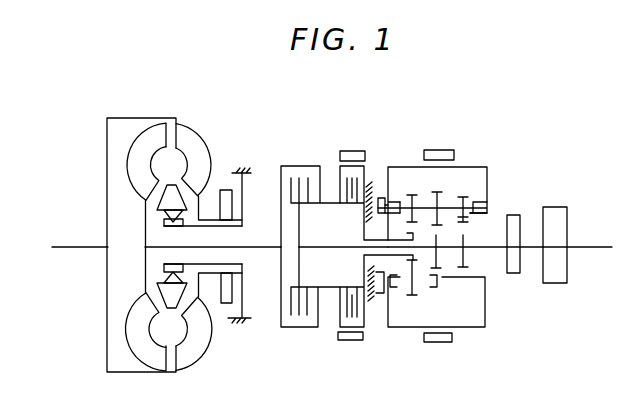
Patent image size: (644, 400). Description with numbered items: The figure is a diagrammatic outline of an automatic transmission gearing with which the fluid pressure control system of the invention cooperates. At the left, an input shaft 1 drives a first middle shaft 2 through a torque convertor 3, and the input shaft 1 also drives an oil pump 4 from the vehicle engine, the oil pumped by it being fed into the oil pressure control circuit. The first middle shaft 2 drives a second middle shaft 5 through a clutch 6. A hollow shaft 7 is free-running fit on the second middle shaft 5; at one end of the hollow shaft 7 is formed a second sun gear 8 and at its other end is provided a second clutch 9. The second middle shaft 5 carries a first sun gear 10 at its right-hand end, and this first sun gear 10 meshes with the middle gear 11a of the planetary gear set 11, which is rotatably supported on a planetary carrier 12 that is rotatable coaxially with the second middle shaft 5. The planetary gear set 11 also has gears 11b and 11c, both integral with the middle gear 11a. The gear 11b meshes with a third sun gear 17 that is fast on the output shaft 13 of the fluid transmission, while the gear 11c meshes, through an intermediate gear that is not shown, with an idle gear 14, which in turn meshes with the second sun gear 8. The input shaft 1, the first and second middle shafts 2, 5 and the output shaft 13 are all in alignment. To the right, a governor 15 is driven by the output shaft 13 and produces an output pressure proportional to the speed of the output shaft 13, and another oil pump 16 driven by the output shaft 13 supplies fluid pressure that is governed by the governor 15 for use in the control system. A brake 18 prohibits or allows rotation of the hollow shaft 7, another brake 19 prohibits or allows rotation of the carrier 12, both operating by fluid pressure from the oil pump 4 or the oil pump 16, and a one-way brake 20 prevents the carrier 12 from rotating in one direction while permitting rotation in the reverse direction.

The input shaft 1 is at (68, 247).
The first middle shaft 2 is at (247, 248).
The torque convertor 3 is at (198, 122).
The oil pump 4 is at (225, 302).
The second middle shaft 5 is at (315, 249).
The clutch 6 is at (293, 163).
The hollow shaft 7 is at (382, 258).
The second sun gear 8 is at (425, 262).
The second clutch 9 is at (336, 181).
The first sun gear 10 is at (437, 250).
The planetary gear set 11 is at (453, 156).
The middle gear 11a is at (440, 190).
The gear 11b is at (466, 195).
The gear 11c is at (410, 194).
The planetary carrier 12 is at (392, 187).
The output shaft 13 is at (593, 246).
The idle gear 14 is at (398, 290).
The governor 15 is at (563, 284).
The oil pump 16 is at (513, 274).
The third sun gear 17 is at (482, 230).
The brake 18 is at (352, 149).
The brake 19 is at (441, 149).
The brake 20 is at (380, 197).